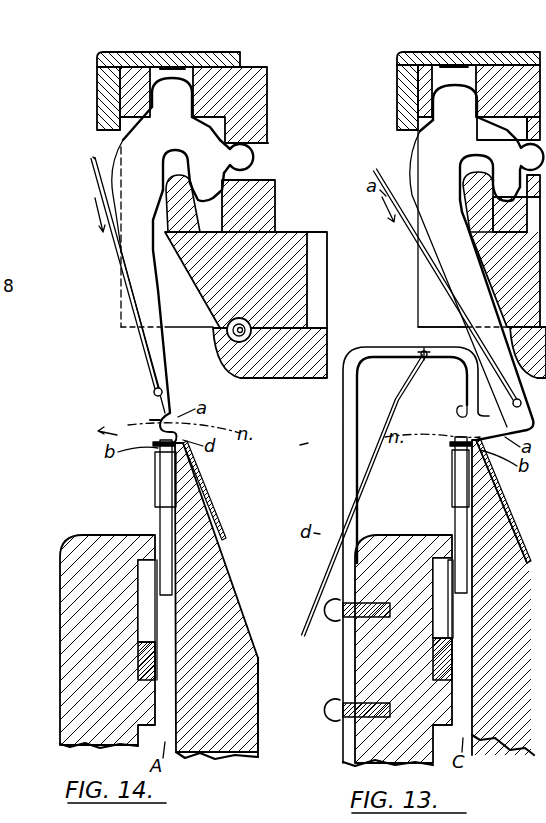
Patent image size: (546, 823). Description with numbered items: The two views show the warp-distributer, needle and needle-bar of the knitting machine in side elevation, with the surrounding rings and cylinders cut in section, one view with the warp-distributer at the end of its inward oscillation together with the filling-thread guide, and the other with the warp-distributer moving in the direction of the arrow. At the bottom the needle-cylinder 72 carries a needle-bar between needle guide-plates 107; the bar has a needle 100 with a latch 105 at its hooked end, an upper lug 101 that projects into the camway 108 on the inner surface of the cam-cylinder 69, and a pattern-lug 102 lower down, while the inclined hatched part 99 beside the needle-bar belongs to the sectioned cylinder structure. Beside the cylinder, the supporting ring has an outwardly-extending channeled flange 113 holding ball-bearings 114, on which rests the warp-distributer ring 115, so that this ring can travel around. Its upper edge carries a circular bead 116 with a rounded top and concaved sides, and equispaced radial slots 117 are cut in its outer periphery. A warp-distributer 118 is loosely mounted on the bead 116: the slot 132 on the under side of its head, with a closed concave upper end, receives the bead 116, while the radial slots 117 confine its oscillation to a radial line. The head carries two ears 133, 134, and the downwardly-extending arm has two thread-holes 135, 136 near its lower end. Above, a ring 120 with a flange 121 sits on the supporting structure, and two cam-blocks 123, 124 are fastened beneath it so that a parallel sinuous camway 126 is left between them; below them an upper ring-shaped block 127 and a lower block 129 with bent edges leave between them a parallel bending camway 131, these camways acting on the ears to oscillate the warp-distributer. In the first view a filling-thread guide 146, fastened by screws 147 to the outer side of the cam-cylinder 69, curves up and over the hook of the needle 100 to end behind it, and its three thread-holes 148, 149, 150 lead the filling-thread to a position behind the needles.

In FIG. 14, the needle cam-cylinder 69 is at (95, 641).
In FIG. 13, the needle cam-cylinder 69 is at (397, 639).
In FIG. 14, the needle-cylinder 72 is at (232, 708).
In FIG. 13, the needle-cylinder 72 is at (503, 751).
In FIG. 14, the inclined wedge 99 is at (216, 596).
In FIG. 13, the inclined wedge 99 is at (503, 596).
In FIG. 14, the needle 100 is at (160, 513).
In FIG. 13, the needle 100 is at (455, 520).
In FIG. 14, the lug 101 is at (150, 612).
In FIG. 13, the lug 101 is at (433, 640).
In FIG. 13, the pattern-lug 102 is at (452, 495).
In FIG. 14, the latch 105 is at (152, 452).
In FIG. 13, the latch 105 is at (450, 455).
In FIG. 14, the needle guide-plate 107 is at (155, 492).
In FIG. 14, the camway 108 is at (148, 573).
In FIG. 13, the camway 108 is at (365, 598).
In FIG. 14, the horizontal flange 113 is at (270, 368).
In FIG. 13, the horizontal flange 113 is at (528, 358).
In FIG. 14, the ball-bearings 114 is at (228, 340).
In FIG. 14, the warp-distributer ring 115 is at (285, 233).
In FIG. 13, the warp-distributer ring 115 is at (418, 284).
In FIG. 14, the circular bead 116 is at (167, 186).
In FIG. 13, the circular bead 116 is at (465, 192).
In FIG. 14, the radial slots 117 is at (180, 318).
In FIG. 13, the radial slots 117 is at (418, 320).
In FIG. 14, the warp-distributer 118 is at (138, 366).
In FIG. 13, the warp-distributer 118 is at (412, 166).
In FIG. 14, the ring 120 is at (176, 48).
In FIG. 13, the ring 120 is at (471, 47).
In FIG. 14, the flange 121 is at (97, 91).
In FIG. 13, the flange 121 is at (397, 91).
In FIG. 14, the cam-block 123 is at (119, 131).
In FIG. 13, the cam-block 123 is at (418, 133).
In FIG. 14, the cam-block 124 is at (250, 95).
In FIG. 13, the cam-block 124 is at (500, 88).
In FIG. 14, the camway 126 is at (179, 63).
In FIG. 13, the camway 126 is at (455, 76).
In FIG. 14, the block 127 is at (268, 134).
In FIG. 13, the block 127 is at (508, 128).
In FIG. 14, the block 129 is at (269, 206).
In FIG. 13, the block 129 is at (531, 216).
In FIG. 14, the camway 131 is at (265, 165).
In FIG. 14, the slot 132 is at (173, 156).
In FIG. 13, the slot 132 is at (472, 168).
In FIG. 14, the ear 133 is at (173, 97).
In FIG. 13, the ear 133 is at (455, 102).
In FIG. 14, the ear 134 is at (238, 156).
In FIG. 13, the ear 134 is at (525, 163).
In FIG. 14, the thread-hole 135 is at (154, 392).
In FIG. 14, the thread-hole 136 is at (150, 416).
In FIG. 13, the filling-thread guide 146 is at (343, 433).
In FIG. 13, the screws 147 is at (348, 660).
In FIG. 13, the thread-hole 148 is at (357, 462).
In FIG. 13, the thread-hole 149 is at (425, 358).
In FIG. 13, the thread-hole 150 is at (457, 409).